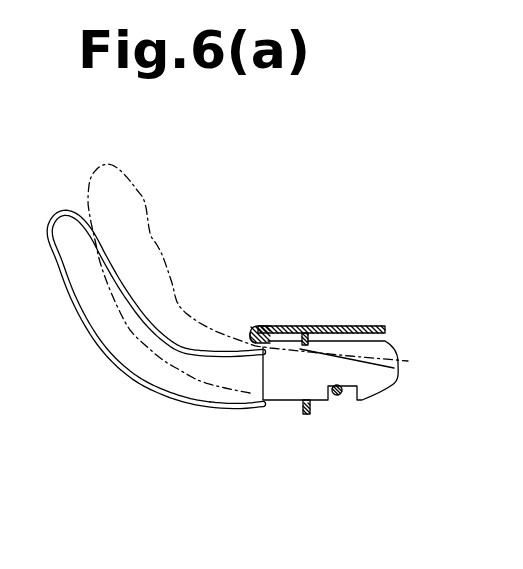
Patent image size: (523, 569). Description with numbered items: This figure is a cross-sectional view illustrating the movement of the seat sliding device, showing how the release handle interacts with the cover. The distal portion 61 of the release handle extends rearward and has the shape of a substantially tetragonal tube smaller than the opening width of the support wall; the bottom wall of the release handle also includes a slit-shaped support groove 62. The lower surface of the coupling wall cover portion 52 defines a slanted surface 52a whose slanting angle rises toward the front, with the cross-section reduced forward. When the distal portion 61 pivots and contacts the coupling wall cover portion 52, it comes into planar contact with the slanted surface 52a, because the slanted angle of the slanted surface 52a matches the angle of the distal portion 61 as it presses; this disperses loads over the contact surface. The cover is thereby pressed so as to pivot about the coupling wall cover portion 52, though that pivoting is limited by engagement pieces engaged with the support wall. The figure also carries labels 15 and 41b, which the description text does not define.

The distal portion 61 is at (147, 202).
The support groove 62 is at (332, 400).
The panel (cover 4) 15 is at (363, 326).
The coupling wall cover portion 52 is at (259, 328).
The slanted surface 52a is at (243, 337).
The bead (trim 41) 41b is at (340, 394).